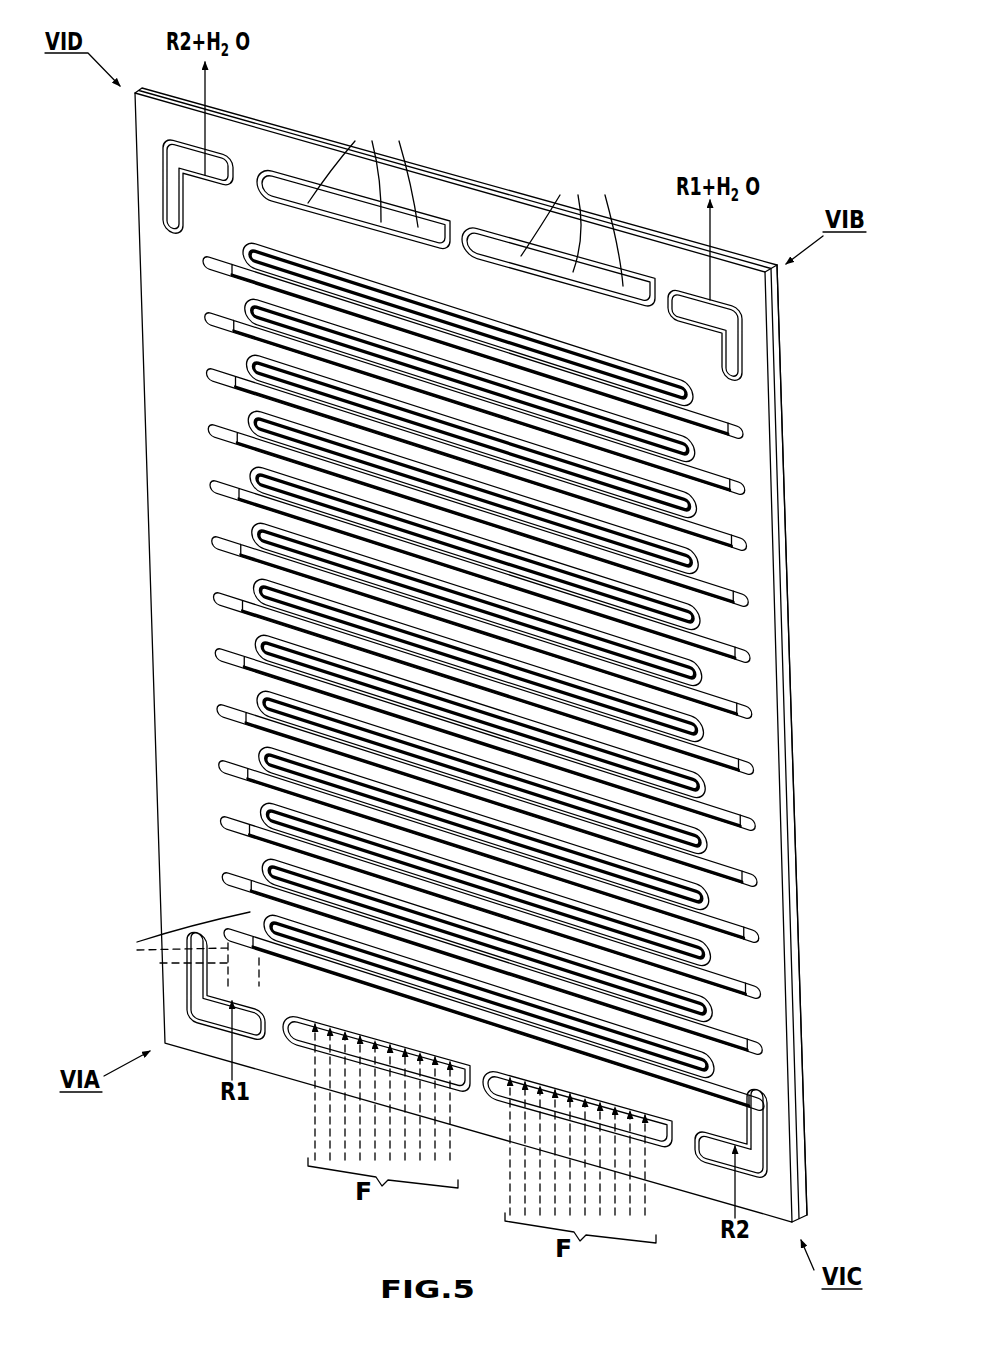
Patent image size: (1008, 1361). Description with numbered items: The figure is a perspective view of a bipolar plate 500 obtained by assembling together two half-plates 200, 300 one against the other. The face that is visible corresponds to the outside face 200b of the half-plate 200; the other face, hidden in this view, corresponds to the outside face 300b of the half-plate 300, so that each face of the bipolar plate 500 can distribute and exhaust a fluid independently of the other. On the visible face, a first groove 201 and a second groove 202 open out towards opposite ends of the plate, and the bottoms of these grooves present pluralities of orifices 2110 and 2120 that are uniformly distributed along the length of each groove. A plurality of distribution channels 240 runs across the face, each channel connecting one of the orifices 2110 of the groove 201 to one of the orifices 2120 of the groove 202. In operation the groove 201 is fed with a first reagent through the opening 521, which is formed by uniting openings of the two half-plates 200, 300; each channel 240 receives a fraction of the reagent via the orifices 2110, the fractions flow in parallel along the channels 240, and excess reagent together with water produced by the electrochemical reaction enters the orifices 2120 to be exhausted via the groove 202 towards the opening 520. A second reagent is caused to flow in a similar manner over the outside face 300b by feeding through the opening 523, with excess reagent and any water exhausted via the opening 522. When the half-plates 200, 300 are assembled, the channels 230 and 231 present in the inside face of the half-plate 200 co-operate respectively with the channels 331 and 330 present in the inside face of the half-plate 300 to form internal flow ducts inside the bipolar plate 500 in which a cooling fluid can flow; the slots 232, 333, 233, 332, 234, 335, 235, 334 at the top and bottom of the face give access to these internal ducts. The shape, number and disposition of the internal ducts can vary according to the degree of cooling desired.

The bipolar plate 500 is at (513, 633).
The half-plate 200 is at (490, 655).
The second groove 202 is at (745, 493).
The outside face 200b is at (781, 960).
The half-plate 300 is at (808, 1030).
The outside face 300b is at (814, 850).
The first groove 201 is at (179, 949).
The orifices 2110 is at (208, 383).
The orifices 2120 is at (746, 604).
The distribution channels 240 is at (714, 798).
The channel 230 is at (372, 170).
The channel 331 is at (372, 170).
The channel 231 is at (574, 226).
The channel 330 is at (574, 226).
The first inlet slot of first plate 232 is at (347, 1117).
The first inlet slot of second plate 333 is at (291, 1046).
The second inlet slot of first plate 233 is at (548, 1171).
The second inlet slot of second plate 332 is at (490, 1101).
The first outlet opening of first plate 234 is at (350, 156).
The first outlet opening of second plate 335 is at (300, 162).
The second outlet opening of first plate 235 is at (558, 209).
The second outlet opening of second plate 334 is at (493, 218).
The opening 520 is at (740, 322).
The opening 521 is at (220, 1000).
The opening 522 is at (192, 160).
The opening 523 is at (755, 1152).